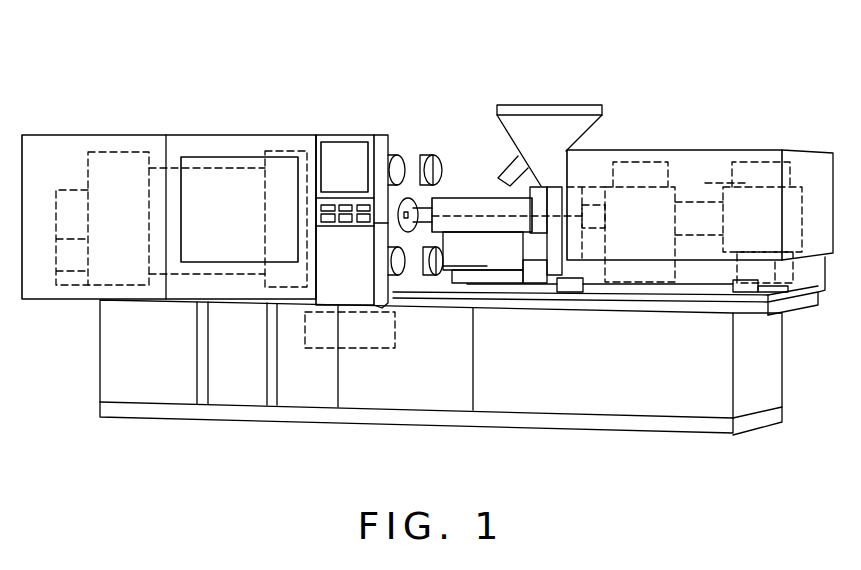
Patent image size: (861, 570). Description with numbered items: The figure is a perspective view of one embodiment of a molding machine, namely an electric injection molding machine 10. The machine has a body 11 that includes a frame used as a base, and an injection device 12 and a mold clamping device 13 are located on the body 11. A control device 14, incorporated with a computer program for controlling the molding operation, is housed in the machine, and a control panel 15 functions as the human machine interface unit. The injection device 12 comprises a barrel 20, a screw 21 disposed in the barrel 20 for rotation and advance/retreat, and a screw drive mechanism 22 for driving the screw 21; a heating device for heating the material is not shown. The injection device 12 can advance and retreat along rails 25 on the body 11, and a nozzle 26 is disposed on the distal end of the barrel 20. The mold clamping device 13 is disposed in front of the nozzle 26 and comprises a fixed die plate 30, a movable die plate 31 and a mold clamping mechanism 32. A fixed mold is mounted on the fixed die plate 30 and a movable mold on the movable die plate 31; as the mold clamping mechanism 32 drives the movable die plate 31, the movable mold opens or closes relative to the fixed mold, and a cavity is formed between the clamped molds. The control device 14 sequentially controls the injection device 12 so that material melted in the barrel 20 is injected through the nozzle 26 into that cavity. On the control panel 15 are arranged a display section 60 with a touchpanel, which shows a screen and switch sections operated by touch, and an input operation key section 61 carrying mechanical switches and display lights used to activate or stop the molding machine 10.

The injection molding machine 10 is at (440, 78).
The body 11 is at (774, 368).
The injection device 12 is at (676, 100).
The mold clamping device 13 is at (254, 86).
The control device 14 is at (363, 348).
The control panel 15 is at (357, 142).
The barrel 20 is at (481, 198).
The screw 21 is at (497, 225).
The screw drive mechanism 22 is at (668, 172).
The rails 25 is at (635, 290).
The nozzle 26 is at (418, 210).
The fixed die plate 30 is at (420, 156).
The movable die plate 31 is at (286, 151).
The mold clamping mechanism 32 is at (128, 152).
The display section 60 is at (336, 157).
The input operation key section 61 is at (343, 226).